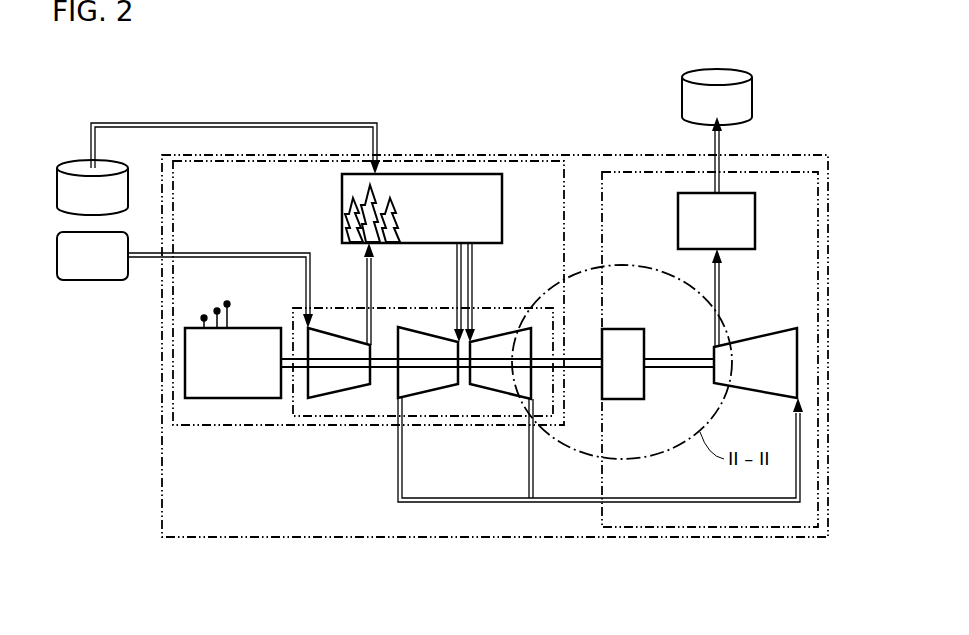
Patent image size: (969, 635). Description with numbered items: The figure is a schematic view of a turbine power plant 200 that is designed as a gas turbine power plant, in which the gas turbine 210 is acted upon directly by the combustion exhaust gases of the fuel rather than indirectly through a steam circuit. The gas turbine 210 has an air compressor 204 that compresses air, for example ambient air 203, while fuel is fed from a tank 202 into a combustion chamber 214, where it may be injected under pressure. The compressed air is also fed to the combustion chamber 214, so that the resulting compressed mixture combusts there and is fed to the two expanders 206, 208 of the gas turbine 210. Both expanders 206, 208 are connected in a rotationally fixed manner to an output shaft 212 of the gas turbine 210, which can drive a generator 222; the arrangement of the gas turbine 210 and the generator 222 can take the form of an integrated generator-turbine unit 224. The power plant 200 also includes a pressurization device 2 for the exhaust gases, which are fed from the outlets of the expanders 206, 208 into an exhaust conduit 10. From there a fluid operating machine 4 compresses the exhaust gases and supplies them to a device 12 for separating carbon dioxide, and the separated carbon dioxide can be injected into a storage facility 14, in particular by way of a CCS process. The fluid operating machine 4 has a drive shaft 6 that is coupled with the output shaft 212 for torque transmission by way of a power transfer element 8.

The pressurization device 2 is at (800, 172).
The fluid operating machine 4 is at (766, 375).
The drive shaft 6 is at (678, 358).
The power transfer element 8 is at (617, 373).
The exhaust conduit 10 is at (644, 505).
The device for separating carbon dioxide 12 is at (705, 230).
The storage facility 14 is at (705, 113).
The turbine power plant 200 is at (162, 475).
The tank 202 is at (76, 201).
The ambient air 203 is at (76, 267).
The air compressor 204 is at (341, 398).
The expander 206 is at (429, 398).
The expander 208 is at (503, 398).
The gas turbine 210 is at (497, 304).
The output shaft 212 is at (581, 358).
The combustion chamber 214 is at (425, 201).
The generator 222 is at (216, 373).
The integrated generator-turbine unit 224 is at (398, 307).